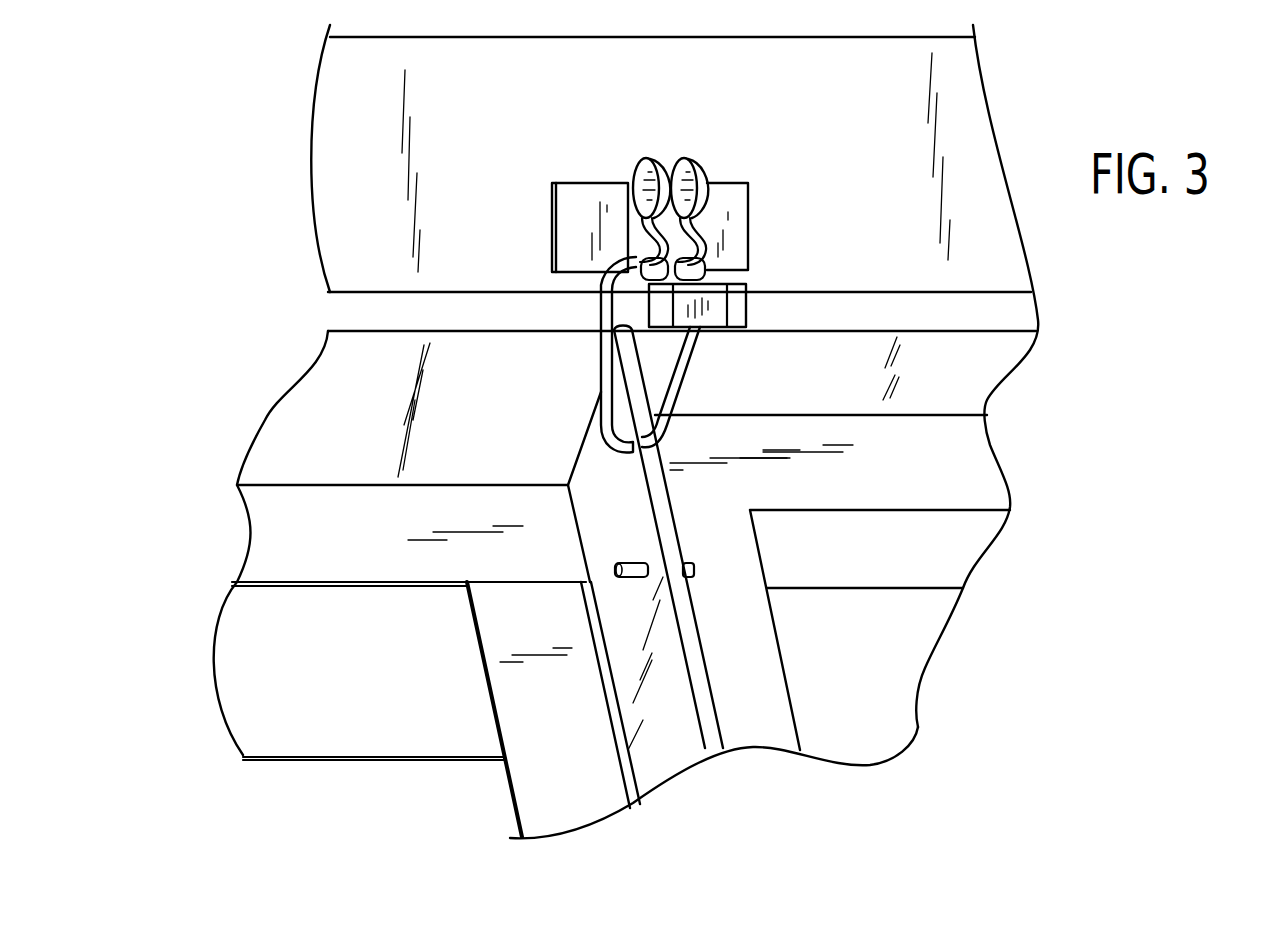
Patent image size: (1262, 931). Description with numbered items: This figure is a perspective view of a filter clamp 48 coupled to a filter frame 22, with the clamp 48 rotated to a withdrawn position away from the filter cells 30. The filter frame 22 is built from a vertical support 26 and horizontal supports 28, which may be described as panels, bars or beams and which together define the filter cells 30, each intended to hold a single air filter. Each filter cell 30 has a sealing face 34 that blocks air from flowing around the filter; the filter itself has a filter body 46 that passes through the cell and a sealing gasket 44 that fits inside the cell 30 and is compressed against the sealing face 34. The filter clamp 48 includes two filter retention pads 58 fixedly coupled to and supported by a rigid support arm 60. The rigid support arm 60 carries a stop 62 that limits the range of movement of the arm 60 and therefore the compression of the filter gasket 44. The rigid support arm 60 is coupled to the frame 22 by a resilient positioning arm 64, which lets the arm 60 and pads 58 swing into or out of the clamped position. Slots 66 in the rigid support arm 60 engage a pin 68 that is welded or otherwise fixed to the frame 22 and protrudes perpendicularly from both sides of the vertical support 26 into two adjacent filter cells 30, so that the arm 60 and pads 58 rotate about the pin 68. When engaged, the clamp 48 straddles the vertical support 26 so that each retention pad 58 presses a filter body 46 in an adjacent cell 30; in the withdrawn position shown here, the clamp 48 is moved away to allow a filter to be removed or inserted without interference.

The filter frame 22 is at (283, 62).
The vertical support 26 is at (678, 730).
The horizontal support 28 is at (869, 298).
The filter cell 30 is at (327, 790).
The sealing face 34 is at (361, 575).
The sealing gasket 44 is at (868, 495).
The filter body 46 is at (887, 642).
The filter clamp 48 is at (587, 152).
The filter retention pad 58 is at (560, 228).
The rigid support arm 60 is at (710, 135).
The stop 62 is at (748, 310).
The resilient positioning arm 64 is at (602, 356).
The slot 66 is at (640, 217).
The pin 68 is at (694, 570).